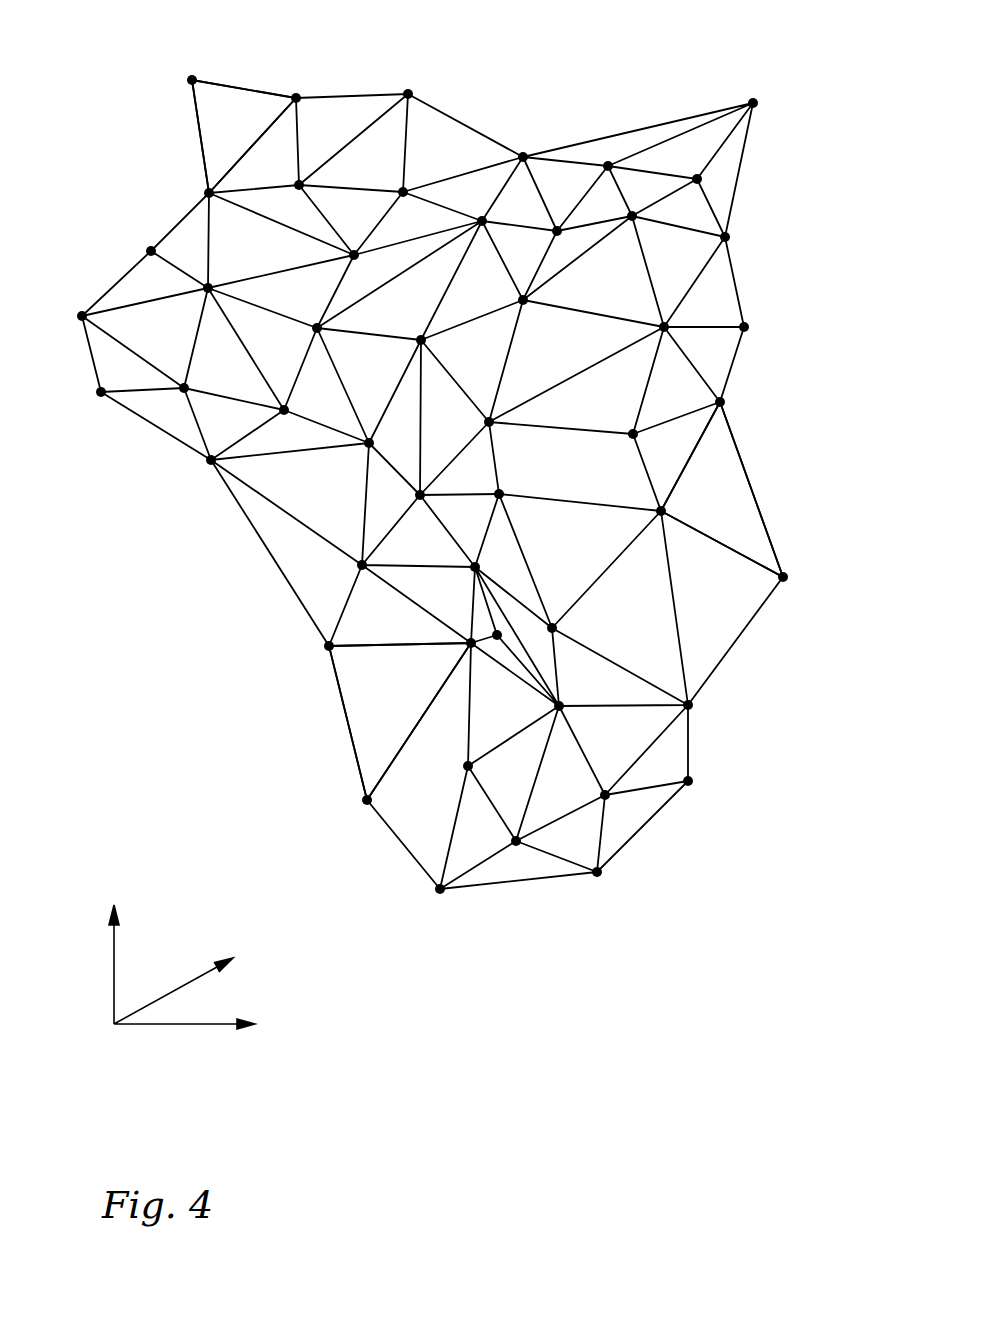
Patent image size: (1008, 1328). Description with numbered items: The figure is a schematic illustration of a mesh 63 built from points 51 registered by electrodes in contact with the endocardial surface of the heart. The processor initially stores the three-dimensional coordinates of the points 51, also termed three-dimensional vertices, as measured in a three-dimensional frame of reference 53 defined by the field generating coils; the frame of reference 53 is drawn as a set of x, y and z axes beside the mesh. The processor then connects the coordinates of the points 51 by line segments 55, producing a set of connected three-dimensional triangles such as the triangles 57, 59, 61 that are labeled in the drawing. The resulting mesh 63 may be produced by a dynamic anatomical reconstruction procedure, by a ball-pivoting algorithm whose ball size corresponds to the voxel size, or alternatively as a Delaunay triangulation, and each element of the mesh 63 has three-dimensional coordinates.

The points 51 is at (753, 103).
The frame of reference 53 is at (113, 960).
The line segments 55 is at (198, 130).
The triangle 57 is at (383, 712).
The triangle 59 is at (237, 122).
The triangle 61 is at (718, 470).
The mesh 63 is at (471, 603).